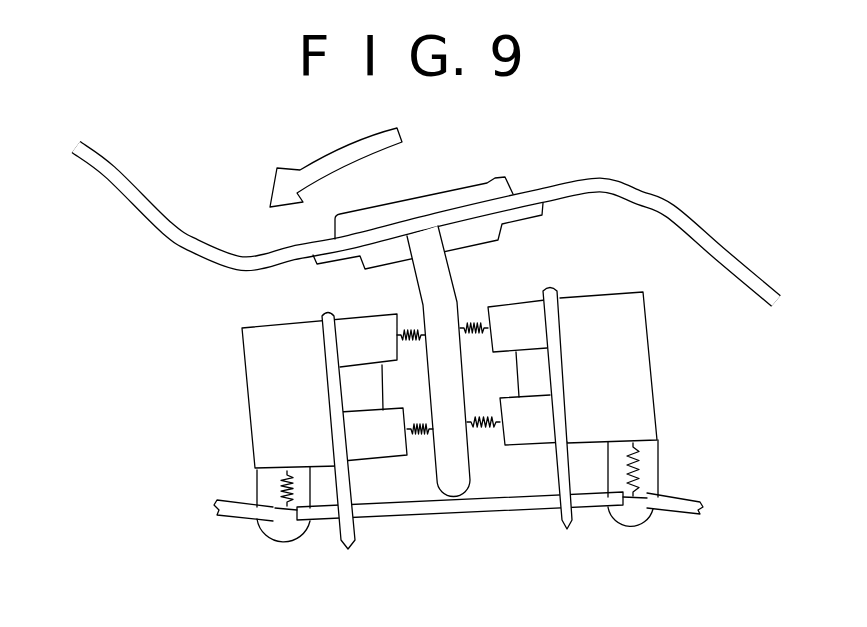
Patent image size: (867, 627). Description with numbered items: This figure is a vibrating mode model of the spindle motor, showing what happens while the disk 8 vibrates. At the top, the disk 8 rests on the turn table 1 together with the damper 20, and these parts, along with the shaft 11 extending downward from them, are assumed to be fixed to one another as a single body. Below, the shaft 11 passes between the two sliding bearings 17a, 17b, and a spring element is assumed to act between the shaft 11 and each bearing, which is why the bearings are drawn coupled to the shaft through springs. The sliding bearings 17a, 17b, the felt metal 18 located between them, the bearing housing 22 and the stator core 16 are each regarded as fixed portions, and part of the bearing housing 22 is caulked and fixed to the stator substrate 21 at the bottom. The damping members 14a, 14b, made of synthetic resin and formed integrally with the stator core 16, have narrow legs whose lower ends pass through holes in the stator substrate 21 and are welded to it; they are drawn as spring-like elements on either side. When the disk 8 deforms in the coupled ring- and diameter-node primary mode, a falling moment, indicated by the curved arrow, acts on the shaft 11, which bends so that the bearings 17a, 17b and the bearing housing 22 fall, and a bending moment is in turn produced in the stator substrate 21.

The turn table 1 is at (383, 247).
The disk 8 is at (673, 207).
The shaft 11 is at (442, 282).
The damping member 14a is at (270, 528).
The damping member 14b is at (627, 521).
The stator core 16 is at (640, 380).
The sliding bearing 17a is at (529, 444).
The sliding bearing 17b is at (517, 312).
The felt metal 18 is at (535, 370).
The damper 20 is at (487, 187).
The stator substrate 21 is at (397, 513).
The bearing housing 22 is at (340, 531).